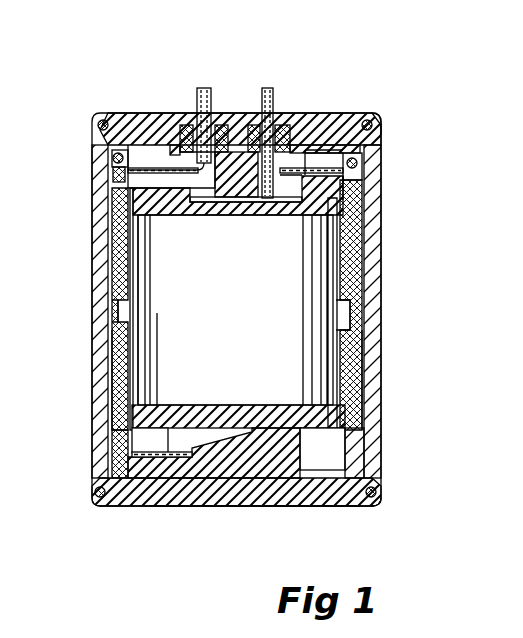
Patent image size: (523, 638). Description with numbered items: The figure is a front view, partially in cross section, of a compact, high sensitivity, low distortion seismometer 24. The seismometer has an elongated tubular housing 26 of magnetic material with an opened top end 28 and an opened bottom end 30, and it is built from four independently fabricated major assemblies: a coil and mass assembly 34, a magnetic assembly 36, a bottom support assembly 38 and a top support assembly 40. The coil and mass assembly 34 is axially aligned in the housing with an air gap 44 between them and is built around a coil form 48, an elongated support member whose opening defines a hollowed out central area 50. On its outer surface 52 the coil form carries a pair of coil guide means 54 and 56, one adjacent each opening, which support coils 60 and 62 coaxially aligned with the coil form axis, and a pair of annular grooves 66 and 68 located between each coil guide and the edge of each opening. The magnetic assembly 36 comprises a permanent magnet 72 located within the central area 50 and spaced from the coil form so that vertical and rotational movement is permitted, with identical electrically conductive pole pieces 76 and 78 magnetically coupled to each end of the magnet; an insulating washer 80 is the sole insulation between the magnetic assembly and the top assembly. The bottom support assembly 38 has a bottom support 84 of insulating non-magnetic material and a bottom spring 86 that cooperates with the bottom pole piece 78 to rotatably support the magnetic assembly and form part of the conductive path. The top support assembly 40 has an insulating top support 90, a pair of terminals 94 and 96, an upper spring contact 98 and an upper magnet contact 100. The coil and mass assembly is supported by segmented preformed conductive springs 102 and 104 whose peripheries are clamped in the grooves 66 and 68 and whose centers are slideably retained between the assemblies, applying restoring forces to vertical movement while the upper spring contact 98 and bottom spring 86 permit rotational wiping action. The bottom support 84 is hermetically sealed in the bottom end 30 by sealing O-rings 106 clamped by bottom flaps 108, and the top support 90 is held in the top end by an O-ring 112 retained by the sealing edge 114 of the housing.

The seismometer 24 is at (318, 102).
The housing 26 is at (368, 368).
The top end 28 is at (104, 118).
The bottom end 30 is at (100, 510).
The coil and mass assembly 34 is at (357, 401).
The magnetic assembly 36 is at (333, 255).
The bottom support assembly 38 is at (256, 507).
The top support assembly 40 is at (147, 108).
The air gap 44 is at (362, 206).
The coil form 48 is at (354, 311).
The hollowed out central area 50 is at (336, 284).
The outer surface 52 is at (118, 314).
The coil guide means 54 is at (122, 268).
The coil guide means 56 is at (122, 366).
The coil 60 is at (122, 229).
The coil 62 is at (122, 400).
The annular groove 66 is at (116, 160).
The annular groove 68 is at (120, 456).
The permanent magnet 72 is at (293, 330).
The pole piece 76 is at (350, 222).
The pole piece 78 is at (352, 428).
The insulating washer 80 is at (354, 168).
The bottom support 84 is at (316, 508).
The bottom spring 86 is at (216, 448).
The top support 90 is at (160, 128).
The terminal 94 is at (206, 100).
The terminal 96 is at (268, 100).
The upper spring contact 98 is at (194, 160).
The upper magnet contact 100 is at (248, 180).
The conductive spring 102 is at (125, 176).
The conductive spring 104 is at (156, 482).
The sealing O-ring 106 is at (377, 493).
The bottom flap 108 is at (379, 506).
The O-ring 112 is at (383, 127).
The sealing edge 114 is at (370, 120).